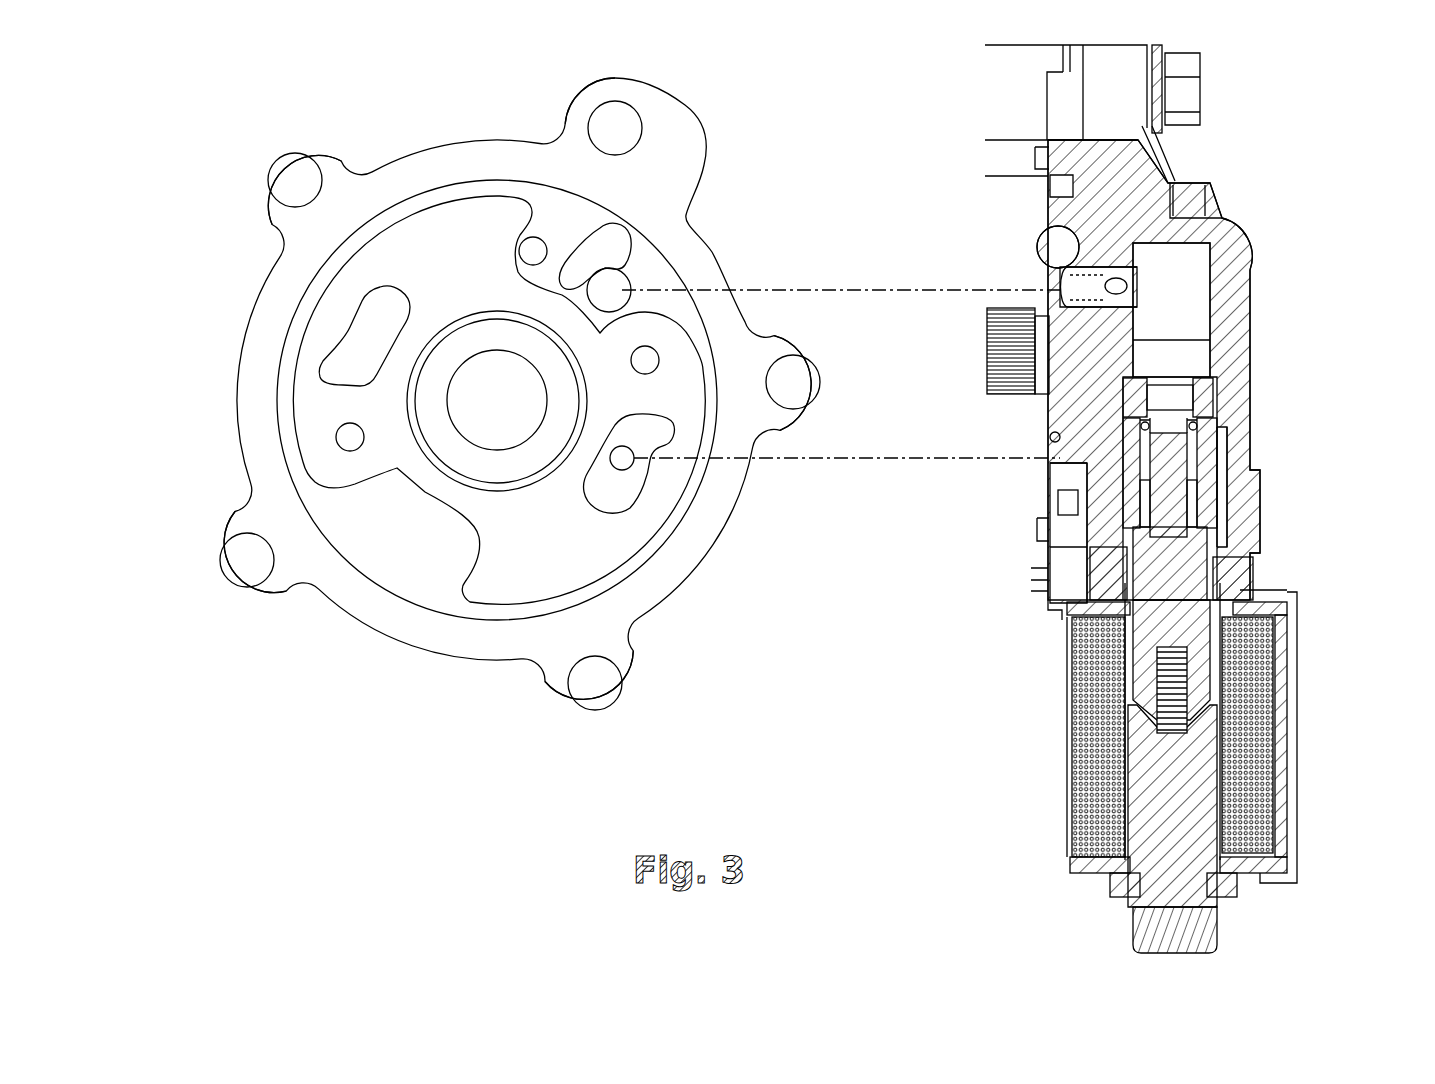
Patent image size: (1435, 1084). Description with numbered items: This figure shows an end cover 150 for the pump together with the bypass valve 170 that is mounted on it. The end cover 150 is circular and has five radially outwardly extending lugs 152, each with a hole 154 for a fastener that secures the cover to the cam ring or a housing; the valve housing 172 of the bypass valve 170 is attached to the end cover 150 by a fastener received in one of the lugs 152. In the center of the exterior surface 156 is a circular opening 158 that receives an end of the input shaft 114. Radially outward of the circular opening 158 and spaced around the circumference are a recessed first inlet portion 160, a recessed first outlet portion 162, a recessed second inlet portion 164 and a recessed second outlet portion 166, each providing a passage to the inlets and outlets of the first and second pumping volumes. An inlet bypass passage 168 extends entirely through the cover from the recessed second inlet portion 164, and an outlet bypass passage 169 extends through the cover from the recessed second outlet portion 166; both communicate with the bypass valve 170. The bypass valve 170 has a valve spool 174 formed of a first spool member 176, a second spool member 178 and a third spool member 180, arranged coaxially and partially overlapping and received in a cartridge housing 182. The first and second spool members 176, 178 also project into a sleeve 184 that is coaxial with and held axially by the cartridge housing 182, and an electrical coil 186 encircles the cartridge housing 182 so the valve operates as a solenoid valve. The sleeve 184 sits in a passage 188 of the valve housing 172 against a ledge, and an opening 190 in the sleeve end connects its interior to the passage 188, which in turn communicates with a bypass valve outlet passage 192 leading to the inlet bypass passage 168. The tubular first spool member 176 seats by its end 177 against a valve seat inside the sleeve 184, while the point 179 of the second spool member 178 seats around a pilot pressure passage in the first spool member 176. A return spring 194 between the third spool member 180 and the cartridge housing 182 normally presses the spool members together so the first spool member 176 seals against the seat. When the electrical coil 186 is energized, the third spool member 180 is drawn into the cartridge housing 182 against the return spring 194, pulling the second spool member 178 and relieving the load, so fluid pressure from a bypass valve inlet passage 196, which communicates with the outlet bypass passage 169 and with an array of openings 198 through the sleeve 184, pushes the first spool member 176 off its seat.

The input shaft 114 is at (978, 341).
The end cover 150 is at (222, 447).
The lugs 152 is at (263, 143).
The hole 154 is at (287, 179).
The exterior surface 156 is at (492, 216).
The circular opening 158 is at (475, 352).
The recessed first inlet portion 160 is at (403, 573).
The recessed first outlet portion 162 is at (354, 336).
The recessed second inlet portion 164 is at (640, 251).
The recessed second outlet portion 166 is at (623, 507).
The inlet bypass passage 168 is at (630, 283).
The outlet bypass passage 169 is at (637, 464).
The bypass valve 170 is at (1336, 352).
The valve housing 172 is at (1221, 236).
The valve spool 174 is at (1255, 569).
The first spool member 176 is at (1250, 459).
The pole piece end 177 is at (1152, 340).
The second spool member 178 is at (1220, 491).
The point 179 is at (1215, 436).
The third spool member 180 is at (1268, 593).
The cartridge housing 182 is at (1188, 862).
The sleeve 184 is at (1217, 411).
The electrical coil 186 is at (1265, 743).
The passage 188 is at (1187, 288).
The opening 190 is at (1185, 380).
The bypass valve outlet passage 192 is at (1052, 238).
The return spring 194 is at (1185, 679).
The bypass valve inlet passage 196 is at (1066, 461).
The array of openings 198 is at (1130, 430).